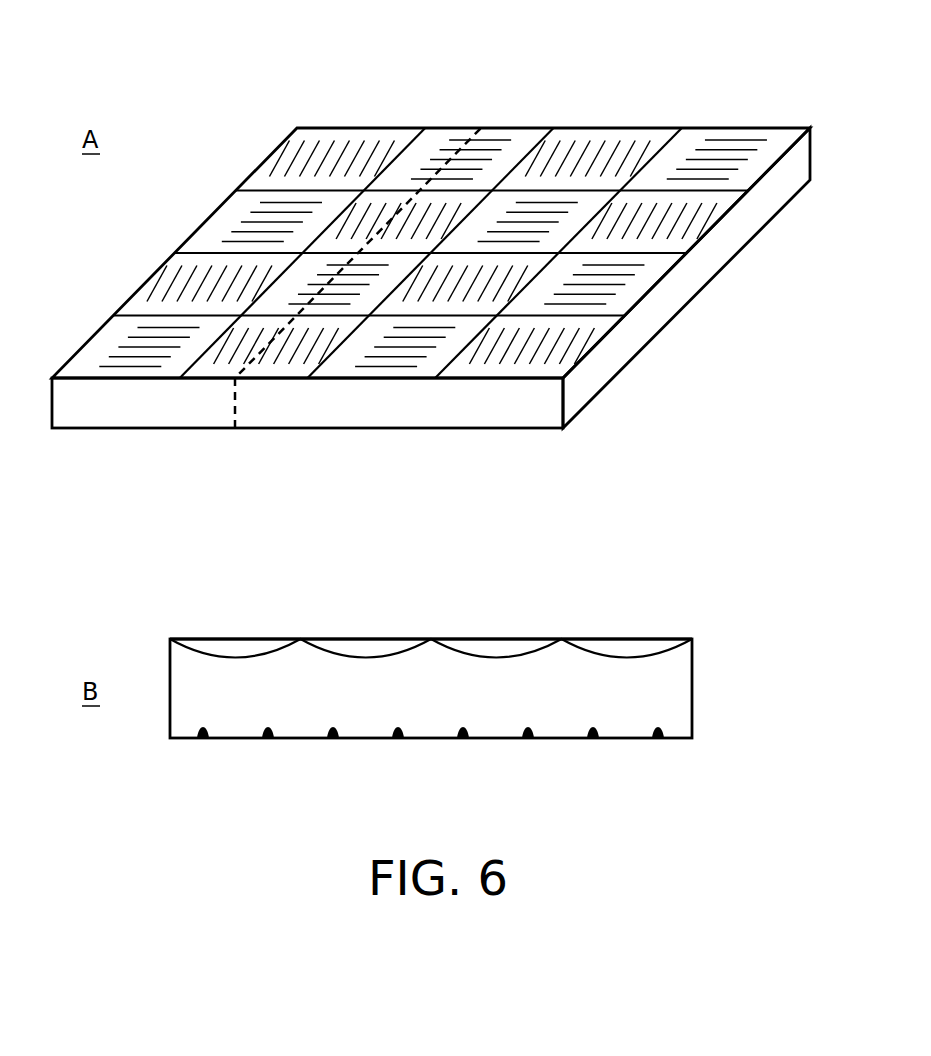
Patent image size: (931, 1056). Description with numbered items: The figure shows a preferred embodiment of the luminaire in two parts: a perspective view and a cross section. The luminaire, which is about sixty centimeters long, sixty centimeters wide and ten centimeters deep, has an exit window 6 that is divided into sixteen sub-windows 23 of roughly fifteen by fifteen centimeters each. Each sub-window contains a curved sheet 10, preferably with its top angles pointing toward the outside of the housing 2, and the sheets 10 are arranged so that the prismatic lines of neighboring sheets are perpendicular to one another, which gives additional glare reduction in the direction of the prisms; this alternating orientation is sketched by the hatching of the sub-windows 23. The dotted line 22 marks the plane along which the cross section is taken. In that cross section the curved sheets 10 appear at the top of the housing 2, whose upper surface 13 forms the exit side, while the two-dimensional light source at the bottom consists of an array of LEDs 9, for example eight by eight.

The housing 2 is at (55, 372).
The exit window 6 is at (356, 116).
The LEDs 9 is at (268, 745).
The curved sheet 10 is at (237, 655).
The light exit surface 13 is at (631, 637).
The dotted line 22 is at (453, 160).
The sub-windows 23 is at (590, 155).